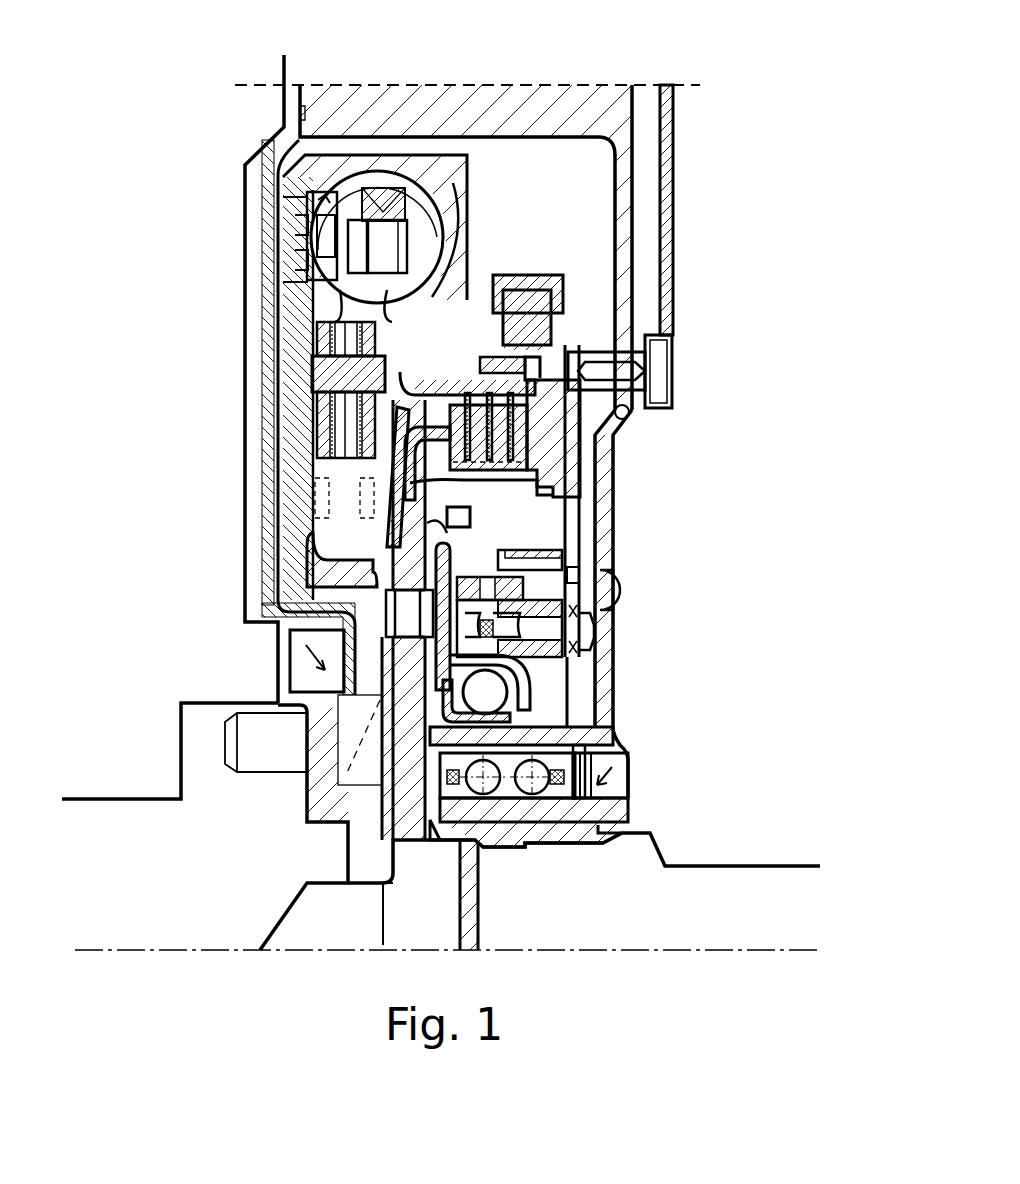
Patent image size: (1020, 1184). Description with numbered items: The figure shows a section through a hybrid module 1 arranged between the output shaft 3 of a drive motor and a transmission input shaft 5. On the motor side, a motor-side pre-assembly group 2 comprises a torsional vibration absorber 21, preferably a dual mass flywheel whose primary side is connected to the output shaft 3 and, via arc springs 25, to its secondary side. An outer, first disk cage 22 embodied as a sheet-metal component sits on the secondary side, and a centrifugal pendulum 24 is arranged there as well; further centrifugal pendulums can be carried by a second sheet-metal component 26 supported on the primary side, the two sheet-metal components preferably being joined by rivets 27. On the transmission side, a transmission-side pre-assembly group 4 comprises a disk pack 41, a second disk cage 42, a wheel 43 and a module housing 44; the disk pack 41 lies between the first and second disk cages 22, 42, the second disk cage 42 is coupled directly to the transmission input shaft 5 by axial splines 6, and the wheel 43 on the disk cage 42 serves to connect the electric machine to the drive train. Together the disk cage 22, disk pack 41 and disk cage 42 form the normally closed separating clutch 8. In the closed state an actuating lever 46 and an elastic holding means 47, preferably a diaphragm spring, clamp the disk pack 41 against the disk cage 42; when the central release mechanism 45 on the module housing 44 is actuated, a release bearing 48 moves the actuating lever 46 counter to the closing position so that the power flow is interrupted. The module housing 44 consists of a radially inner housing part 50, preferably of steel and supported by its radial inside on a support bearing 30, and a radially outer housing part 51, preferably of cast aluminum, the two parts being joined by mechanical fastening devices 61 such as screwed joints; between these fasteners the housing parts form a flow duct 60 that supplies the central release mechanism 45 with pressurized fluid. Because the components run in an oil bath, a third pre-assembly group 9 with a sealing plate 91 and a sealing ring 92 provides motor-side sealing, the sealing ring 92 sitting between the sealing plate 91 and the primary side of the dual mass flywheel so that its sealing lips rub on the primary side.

The hybrid module 1 is at (594, 85).
The motor-side pre-assembly group 2 is at (357, 128).
The output shaft 3 is at (143, 822).
The transmission-side pre-assembly group 4 is at (480, 478).
The transmission input shaft 5 is at (640, 880).
The axial splines 6 is at (600, 800).
The separating clutch 8 is at (590, 370).
The third pre-assembly group 9 is at (277, 490).
The torsional vibration absorber 21 is at (305, 178).
The first disk cage 22 is at (483, 380).
The centrifugal pendulum 24 is at (297, 342).
The arc springs 25 is at (398, 190).
The second sheet-metal component 26 is at (353, 298).
The rivets 27 is at (405, 250).
The support bearing 30 is at (548, 810).
The disk pack 41 is at (557, 475).
The second disk cage 42 is at (548, 486).
The wheel 43 is at (555, 318).
The module housing 44 is at (667, 200).
The central release mechanism 45 is at (590, 625).
The actuating lever 46 is at (540, 535).
The elastic holding means 47 is at (575, 585).
The release bearing 48 is at (540, 705).
The radially inner housing part 50 is at (615, 670).
The radially outer housing part 51 is at (668, 145).
The flow duct 60 is at (650, 105).
The mechanical fastening devices 61 is at (660, 380).
The sealing plate 91 is at (262, 548).
The sealing ring 92 is at (288, 655).